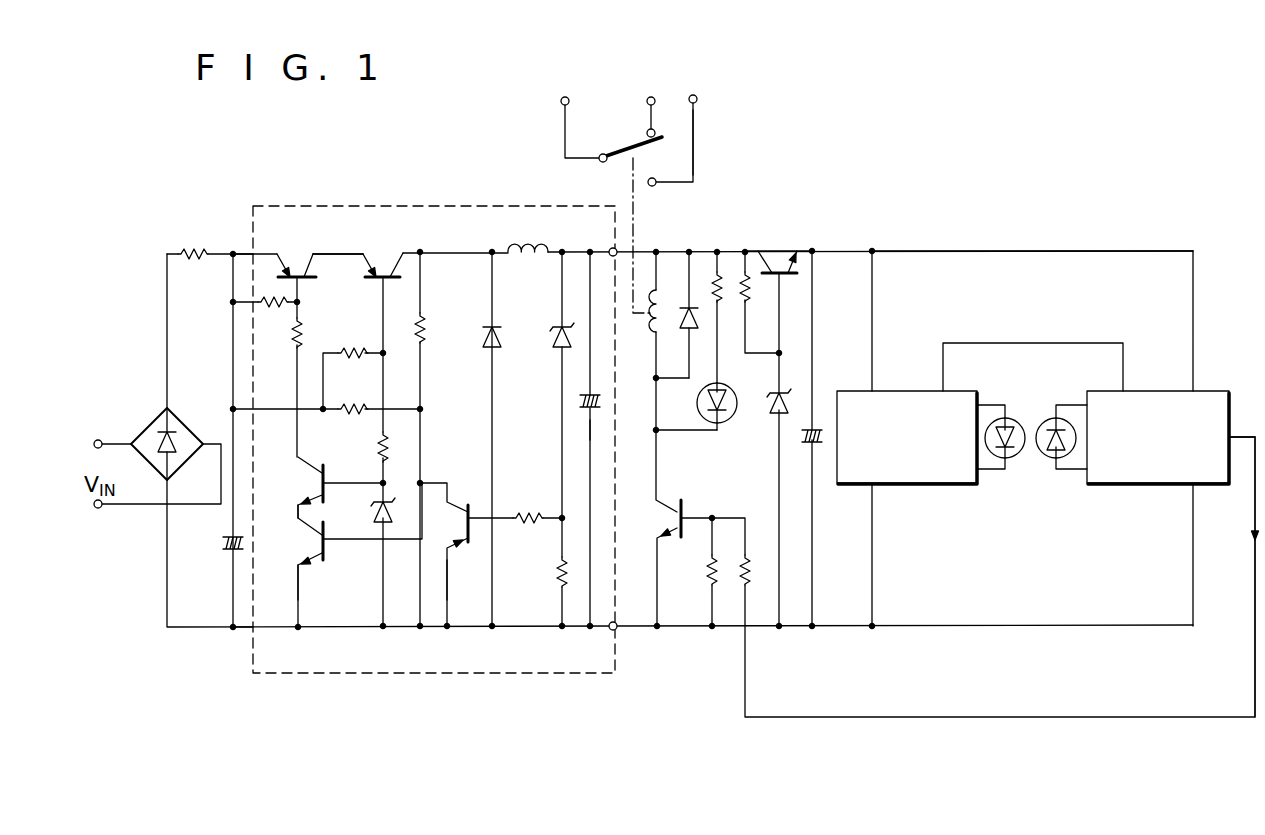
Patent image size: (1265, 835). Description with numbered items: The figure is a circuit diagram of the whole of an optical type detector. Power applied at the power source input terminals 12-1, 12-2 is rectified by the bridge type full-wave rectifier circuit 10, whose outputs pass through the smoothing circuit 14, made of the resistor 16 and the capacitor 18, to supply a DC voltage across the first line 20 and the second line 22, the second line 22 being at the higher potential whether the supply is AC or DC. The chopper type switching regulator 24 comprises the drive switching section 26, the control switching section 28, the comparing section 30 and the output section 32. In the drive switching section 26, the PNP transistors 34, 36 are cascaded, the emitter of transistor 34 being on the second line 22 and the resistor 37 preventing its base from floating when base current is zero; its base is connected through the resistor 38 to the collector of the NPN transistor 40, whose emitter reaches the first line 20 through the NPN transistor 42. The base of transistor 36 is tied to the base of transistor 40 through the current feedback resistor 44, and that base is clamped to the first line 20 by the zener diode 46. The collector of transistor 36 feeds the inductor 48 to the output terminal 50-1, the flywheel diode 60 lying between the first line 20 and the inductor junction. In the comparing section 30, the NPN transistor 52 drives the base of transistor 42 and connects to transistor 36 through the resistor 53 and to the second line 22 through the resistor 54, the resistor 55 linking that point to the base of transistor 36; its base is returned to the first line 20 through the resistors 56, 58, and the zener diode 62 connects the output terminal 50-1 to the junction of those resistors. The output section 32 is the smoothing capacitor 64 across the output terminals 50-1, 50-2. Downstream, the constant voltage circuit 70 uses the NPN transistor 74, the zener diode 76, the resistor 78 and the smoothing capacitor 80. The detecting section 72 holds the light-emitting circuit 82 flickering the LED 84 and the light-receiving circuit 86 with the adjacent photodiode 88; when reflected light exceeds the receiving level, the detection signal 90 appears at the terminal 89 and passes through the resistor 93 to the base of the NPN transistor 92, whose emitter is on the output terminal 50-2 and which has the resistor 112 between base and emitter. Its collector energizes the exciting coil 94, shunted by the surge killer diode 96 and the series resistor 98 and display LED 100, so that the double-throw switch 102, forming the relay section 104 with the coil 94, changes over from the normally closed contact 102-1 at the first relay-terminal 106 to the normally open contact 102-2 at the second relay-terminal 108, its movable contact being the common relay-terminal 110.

The bridge type full-wave rectifier circuit 10 is at (156, 420).
The power source input terminal 12-1 is at (96, 438).
The power source input terminal 12-2 is at (98, 510).
The smoothing circuit 14 is at (198, 246).
The resistor 16 is at (194, 262).
The capacitor 18 is at (226, 553).
The first line 20 is at (240, 630).
The second line 22 is at (248, 252).
The switching regulator 24 is at (484, 675).
The drive switching section 26 is at (340, 246).
The control switching section 28 is at (336, 565).
The comparing section 30 is at (514, 566).
The output section 32 is at (576, 442).
The transistor 34 is at (306, 280).
The transistor 36 is at (380, 282).
The resistor 37 is at (272, 312).
The resistor 38 is at (292, 338).
The transistor 40 is at (312, 486).
The transistor 42 is at (312, 541).
The current feedback resistor 44 is at (380, 446).
The zener diode 46 is at (372, 508).
The inductor 48 is at (528, 248).
The output terminal 50-1 is at (610, 248).
The output terminal 50-2 is at (610, 630).
The transistor 52 is at (470, 506).
The resistor 53 is at (428, 320).
The resistor 54 is at (348, 412).
The resistor 55 is at (352, 360).
The resistor 56 is at (528, 514).
The resistor 58 is at (558, 572).
The flywheel diode 60 is at (488, 342).
The zener diode 62 is at (558, 342).
The smoothing capacitor 64 is at (588, 405).
The constant voltage circuit 70 is at (779, 250).
The detecting section 72 is at (1030, 244).
The transistor 74 is at (784, 278).
The zener diode 76 is at (774, 412).
The resistor 78 is at (748, 300).
The smoothing capacitor 80 is at (808, 444).
The light-emitting circuit 82 is at (913, 486).
The light-emitting diode 84 is at (1007, 462).
The light-receiving circuit 86 is at (1130, 486).
The photodiode 88 is at (1055, 462).
The terminal 89 is at (1232, 436).
The detection signal 90 is at (1252, 496).
The transistor 92 is at (670, 500).
The resistor 93 is at (748, 574).
The exciting coil 94 is at (650, 322).
The surge killer diode 96 is at (686, 330).
The resistor 98 is at (710, 270).
The display LED 100 is at (698, 406).
The double-throw switch 102 is at (620, 166).
The normally closed contact 102-1 is at (648, 131).
The normally open contact 102-2 is at (660, 184).
The relay section 104 is at (708, 144).
The first relay-terminal 106 is at (651, 97).
The second relay-terminal 108 is at (694, 95).
The common relay-terminal 110 is at (565, 97).
The resistor 112 is at (704, 574).